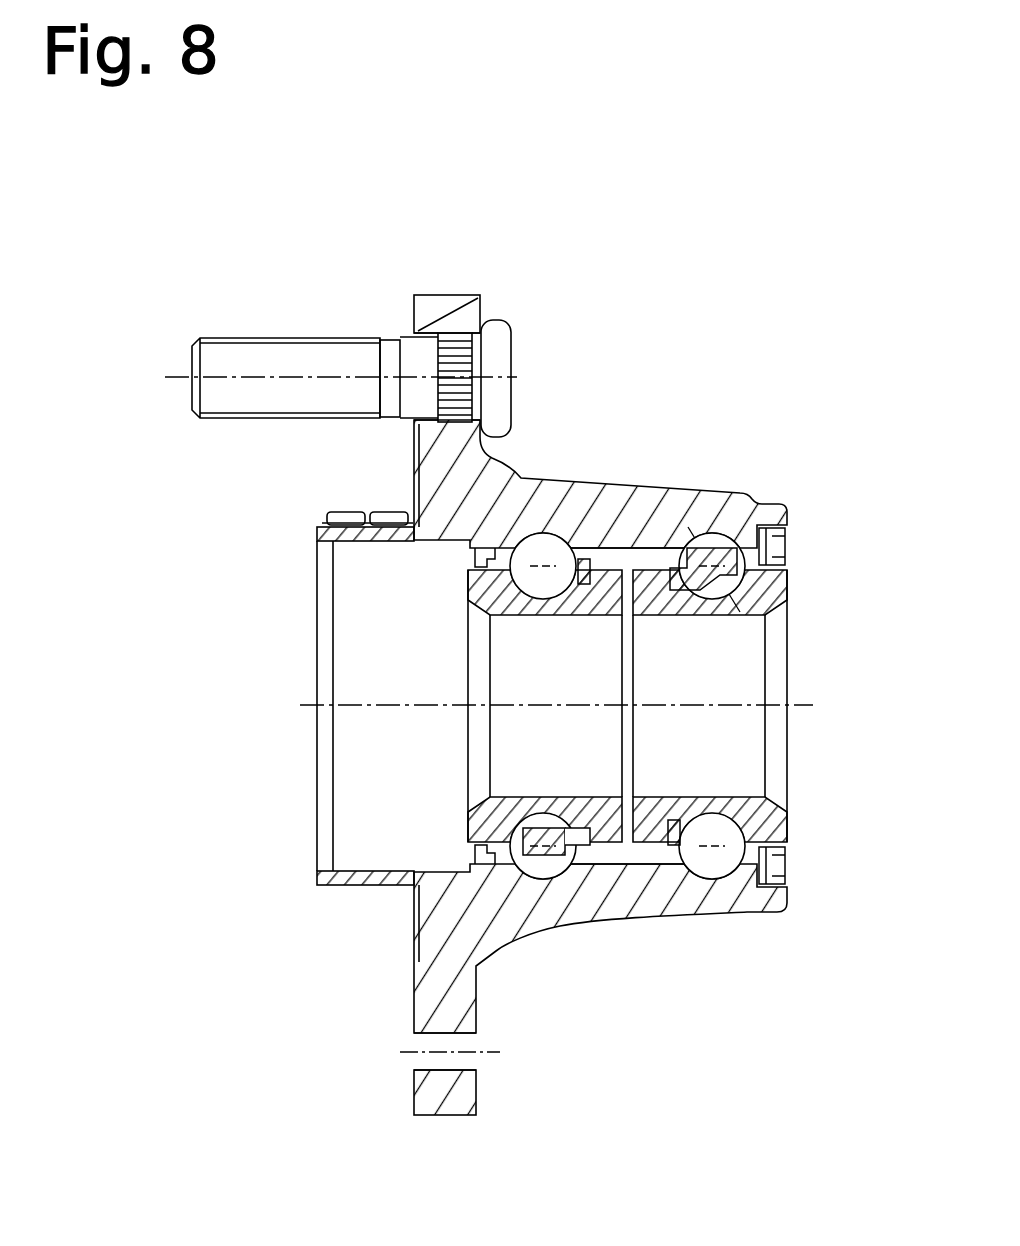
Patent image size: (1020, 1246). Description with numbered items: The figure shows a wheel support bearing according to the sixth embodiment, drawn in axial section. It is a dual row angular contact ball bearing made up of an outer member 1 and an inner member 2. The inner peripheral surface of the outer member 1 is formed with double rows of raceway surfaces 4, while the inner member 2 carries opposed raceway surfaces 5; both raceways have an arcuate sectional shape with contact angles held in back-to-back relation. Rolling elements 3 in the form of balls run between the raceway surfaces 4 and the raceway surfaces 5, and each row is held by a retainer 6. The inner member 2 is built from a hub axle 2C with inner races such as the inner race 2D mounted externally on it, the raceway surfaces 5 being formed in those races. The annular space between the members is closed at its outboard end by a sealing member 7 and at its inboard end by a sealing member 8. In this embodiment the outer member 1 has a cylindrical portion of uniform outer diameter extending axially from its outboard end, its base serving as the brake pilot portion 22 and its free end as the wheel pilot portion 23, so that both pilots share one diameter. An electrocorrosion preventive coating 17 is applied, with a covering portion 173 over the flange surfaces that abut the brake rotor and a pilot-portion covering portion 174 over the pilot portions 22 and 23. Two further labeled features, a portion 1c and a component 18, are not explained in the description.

The outer member 1 is at (636, 473).
The flange portion 1c is at (453, 313).
The inner member 2 is at (192, 663).
The hub axle 2C is at (572, 612).
The inner race 2D is at (707, 600).
The rolling elements 3 is at (555, 862).
The raceway surfaces 4 is at (555, 860).
The raceway surfaces 5 is at (543, 867).
The retainer 6 is at (590, 853).
The sealing member 7 is at (410, 948).
The sealing member 8 is at (788, 858).
The electrocorrosion preventive coating 17 is at (410, 312).
The covering portion 173 is at (350, 886).
The pilot-portion covering portion 174 is at (408, 1002).
The stud bolt 18 is at (228, 371).
The brake pilot portion 22 is at (390, 505).
The wheel pilot portion 23 is at (347, 503).